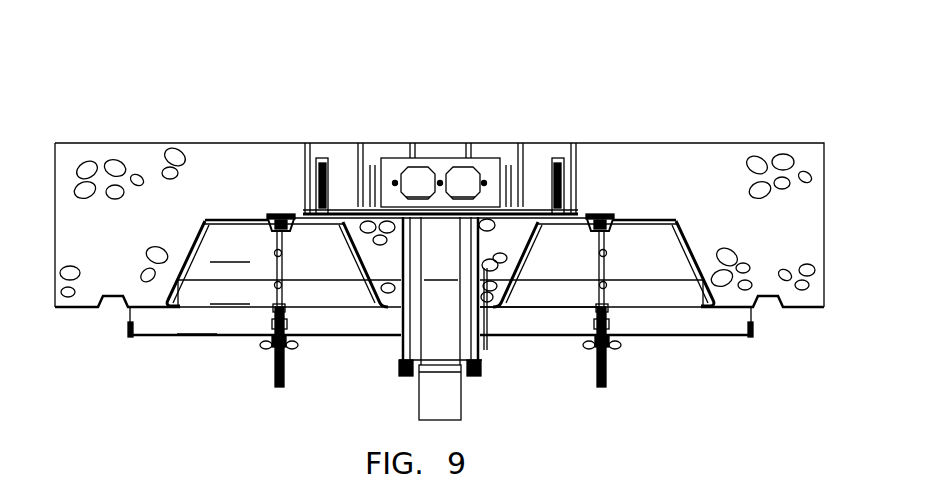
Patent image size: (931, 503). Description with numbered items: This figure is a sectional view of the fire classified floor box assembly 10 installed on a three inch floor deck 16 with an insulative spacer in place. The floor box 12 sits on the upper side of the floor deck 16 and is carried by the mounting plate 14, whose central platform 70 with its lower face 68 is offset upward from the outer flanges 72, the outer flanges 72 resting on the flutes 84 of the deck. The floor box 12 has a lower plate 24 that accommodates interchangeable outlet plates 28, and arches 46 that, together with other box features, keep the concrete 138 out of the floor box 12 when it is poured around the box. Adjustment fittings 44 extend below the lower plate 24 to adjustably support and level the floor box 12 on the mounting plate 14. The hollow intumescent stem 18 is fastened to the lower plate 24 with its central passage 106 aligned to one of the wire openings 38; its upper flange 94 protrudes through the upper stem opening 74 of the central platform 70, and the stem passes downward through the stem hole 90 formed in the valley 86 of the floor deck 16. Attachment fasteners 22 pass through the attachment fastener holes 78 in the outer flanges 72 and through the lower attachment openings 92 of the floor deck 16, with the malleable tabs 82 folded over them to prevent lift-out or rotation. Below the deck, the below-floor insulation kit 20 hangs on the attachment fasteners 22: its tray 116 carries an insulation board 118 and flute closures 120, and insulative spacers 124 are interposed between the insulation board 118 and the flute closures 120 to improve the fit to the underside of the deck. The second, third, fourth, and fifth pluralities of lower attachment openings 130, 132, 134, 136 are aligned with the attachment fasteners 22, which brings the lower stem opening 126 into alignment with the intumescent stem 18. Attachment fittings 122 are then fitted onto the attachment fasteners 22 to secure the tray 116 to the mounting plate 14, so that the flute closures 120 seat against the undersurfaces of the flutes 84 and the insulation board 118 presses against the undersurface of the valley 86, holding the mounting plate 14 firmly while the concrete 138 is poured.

The fire classified floor box assembly 10 is at (221, 94).
The floor box 12 is at (528, 133).
The mounting plate 14 is at (580, 212).
The floor deck 16 is at (192, 243).
The intumescent stem 18 is at (402, 396).
The below-floor insulation kit 20 is at (764, 330).
The attachment fasteners 22 is at (273, 372).
The lower plate 24 is at (326, 207).
The outlet plates 28 is at (390, 165).
The wire openings 38 is at (455, 220).
The adjustment fittings 44 is at (560, 155).
The arches 46 is at (487, 155).
The lower face 68 is at (678, 233).
The central platform 70 is at (297, 210).
The outer flanges 72 is at (233, 221).
The upper stem openings 74 is at (463, 222).
The attachment fastener holes 78 is at (273, 216).
The malleable tabs 82 is at (281, 216).
The flutes 84 is at (708, 248).
The valley 86 is at (387, 317).
The stem hole 90 is at (478, 310).
The lower attachment openings 92 is at (232, 218).
The upper flange 94 is at (540, 296).
The central passage 106 is at (437, 350).
The tray 116 is at (140, 341).
The insulation board 118 is at (440, 307).
The flute closures 120 is at (230, 251).
The attachment fittings 122 is at (263, 342).
The insulative spacers 124 is at (289, 293).
The lower stem opening 126 is at (478, 345).
The second plurality of lower attachment openings 130 is at (281, 323).
The third plurality of lower attachment openings 132 is at (282, 312).
The fourth plurality of lower attachment openings 134 is at (282, 255).
The fifth plurality of lower attachment openings 136 is at (282, 284).
The concrete 138 is at (93, 143).